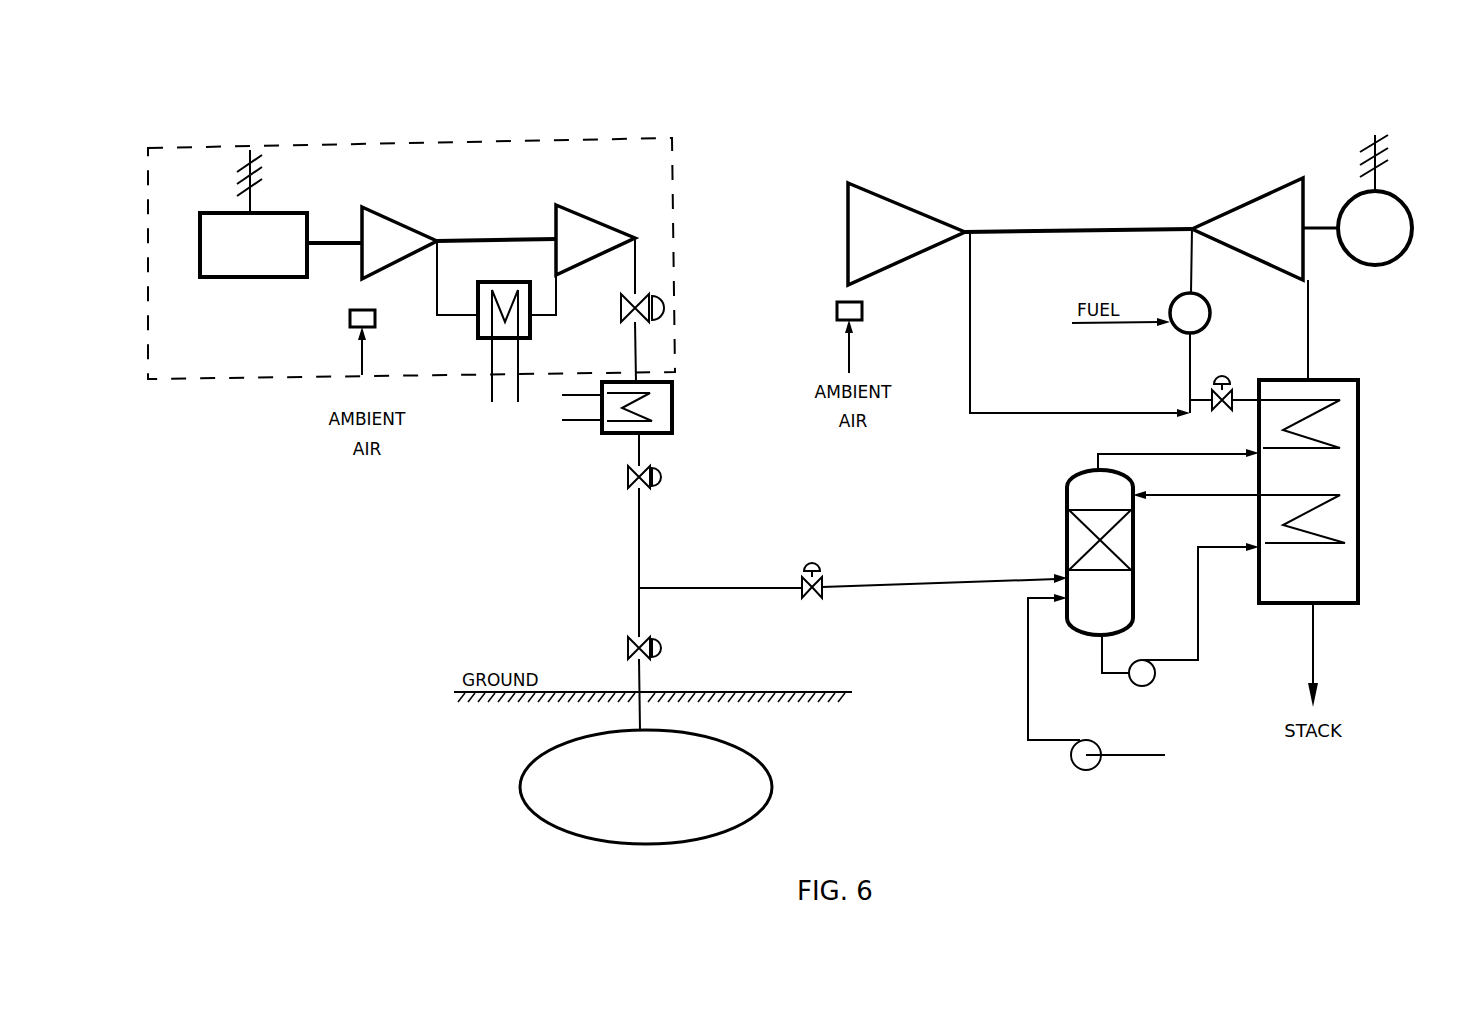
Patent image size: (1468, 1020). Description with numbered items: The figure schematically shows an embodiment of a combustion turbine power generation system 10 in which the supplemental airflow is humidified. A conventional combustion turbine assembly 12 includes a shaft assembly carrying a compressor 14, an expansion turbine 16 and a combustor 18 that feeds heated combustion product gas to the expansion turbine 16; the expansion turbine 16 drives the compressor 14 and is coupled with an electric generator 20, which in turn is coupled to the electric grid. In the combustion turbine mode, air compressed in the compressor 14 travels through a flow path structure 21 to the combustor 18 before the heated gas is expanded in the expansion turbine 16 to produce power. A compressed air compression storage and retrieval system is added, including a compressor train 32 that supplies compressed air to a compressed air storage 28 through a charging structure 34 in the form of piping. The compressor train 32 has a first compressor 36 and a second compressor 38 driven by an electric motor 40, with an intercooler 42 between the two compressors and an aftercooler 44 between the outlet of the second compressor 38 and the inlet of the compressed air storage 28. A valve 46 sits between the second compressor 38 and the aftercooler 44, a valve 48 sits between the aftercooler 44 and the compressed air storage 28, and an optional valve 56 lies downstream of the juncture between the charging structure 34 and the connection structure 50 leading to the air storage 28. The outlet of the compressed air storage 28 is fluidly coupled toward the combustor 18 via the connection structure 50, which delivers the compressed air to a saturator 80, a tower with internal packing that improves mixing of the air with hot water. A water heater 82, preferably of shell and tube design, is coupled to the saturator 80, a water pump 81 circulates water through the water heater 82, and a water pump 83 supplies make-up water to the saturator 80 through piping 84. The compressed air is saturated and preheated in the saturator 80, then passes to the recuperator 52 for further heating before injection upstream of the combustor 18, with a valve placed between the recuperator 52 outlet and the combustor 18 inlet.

The combustion turbine power generation system 10 is at (791, 106).
The combustion turbine assembly 12 is at (1075, 251).
The compressor 14 is at (892, 222).
The expansion turbine 16 is at (1245, 230).
The combustor 18 is at (1178, 327).
The electric generator 20 is at (1400, 228).
The flow path structure 21 is at (982, 374).
The compressed air storage 28 is at (752, 775).
The compressor train 32 is at (647, 178).
The charging structure 34 is at (652, 535).
The first compressor 36 is at (390, 233).
The second compressor 38 is at (570, 230).
The electric motor 40 is at (240, 285).
The intercooler 42 is at (475, 325).
The aftercooler 44 is at (668, 412).
The valve 46 is at (668, 308).
The valve 48 is at (667, 476).
The connection structure 50 is at (896, 577).
The recuperator 52 is at (1338, 419).
The optional valve 56 is at (670, 648).
The saturator 80 is at (1063, 507).
The water pump 81 is at (1157, 677).
The water heater 82 is at (1340, 527).
The water pump 83 is at (1100, 737).
The piping 84 is at (1022, 680).